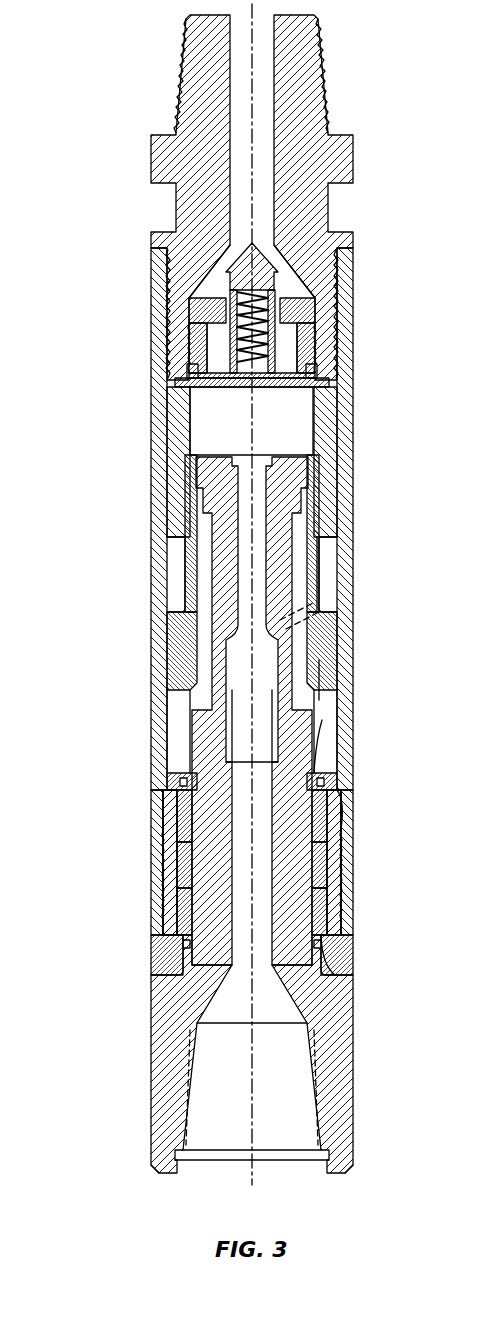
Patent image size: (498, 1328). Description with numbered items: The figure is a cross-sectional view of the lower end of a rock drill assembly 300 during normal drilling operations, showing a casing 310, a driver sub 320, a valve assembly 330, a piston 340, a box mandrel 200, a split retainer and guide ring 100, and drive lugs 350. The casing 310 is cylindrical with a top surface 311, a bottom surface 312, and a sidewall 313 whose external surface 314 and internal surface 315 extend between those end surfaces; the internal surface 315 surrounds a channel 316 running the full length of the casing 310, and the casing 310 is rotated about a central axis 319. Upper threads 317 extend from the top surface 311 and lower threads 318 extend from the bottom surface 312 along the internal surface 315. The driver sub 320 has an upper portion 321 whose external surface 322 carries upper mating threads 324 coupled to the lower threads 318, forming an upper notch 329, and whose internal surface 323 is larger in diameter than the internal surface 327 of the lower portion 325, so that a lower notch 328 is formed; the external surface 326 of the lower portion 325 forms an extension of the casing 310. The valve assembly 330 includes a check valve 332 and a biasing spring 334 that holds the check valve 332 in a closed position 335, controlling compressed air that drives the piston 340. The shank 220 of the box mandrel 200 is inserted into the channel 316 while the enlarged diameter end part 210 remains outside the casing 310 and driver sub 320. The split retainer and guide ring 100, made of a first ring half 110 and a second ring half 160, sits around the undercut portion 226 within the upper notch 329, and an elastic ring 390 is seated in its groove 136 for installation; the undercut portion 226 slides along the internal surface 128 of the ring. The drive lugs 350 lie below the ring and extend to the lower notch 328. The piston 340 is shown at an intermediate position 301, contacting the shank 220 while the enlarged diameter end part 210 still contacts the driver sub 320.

The rock drill assembly 300 is at (127, 50).
The closed position 335 is at (243, 243).
The check valve 332 is at (265, 250).
The top surface 311 is at (352, 238).
The valve assembly 330 is at (272, 282).
The biasing spring 334 is at (248, 352).
The upper threads 317 is at (338, 340).
The channel 316 is at (300, 415).
The casing 310 is at (345, 520).
The piston 340 is at (225, 568).
The intermediate position 301 is at (183, 690).
The sidewall 313 is at (345, 655).
The internal surface 315 is at (178, 712).
The external surface 314 is at (340, 690).
The shank 220 is at (195, 735).
The split retainer and guide ring 100 is at (318, 760).
The undercut portion 226 is at (192, 762).
The internal surface 128 is at (238, 773).
The second ring half 160 is at (320, 770).
The first ring half 110 is at (178, 780).
The upper notch 329 is at (165, 786).
The elastic ring 390 is at (326, 782).
The upper mating threads 324 is at (170, 810).
The groove 136 is at (345, 790).
The internal surface 323 is at (188, 847).
The lower threads 318 is at (342, 825).
The upper portion 321 is at (180, 882).
The drive lugs 350 is at (322, 900).
The external surface 322 is at (166, 895).
The bottom surface 312 is at (348, 918).
The external surface 326 is at (155, 936).
The driver sub 320 is at (340, 945).
The internal surface 327 is at (183, 950).
The lower portion 325 is at (345, 953).
The box mandrel 200 is at (175, 1040).
The lower notch 328 is at (332, 972).
The enlarged diameter end part 210 is at (160, 1110).
The central axis 319 is at (255, 1100).